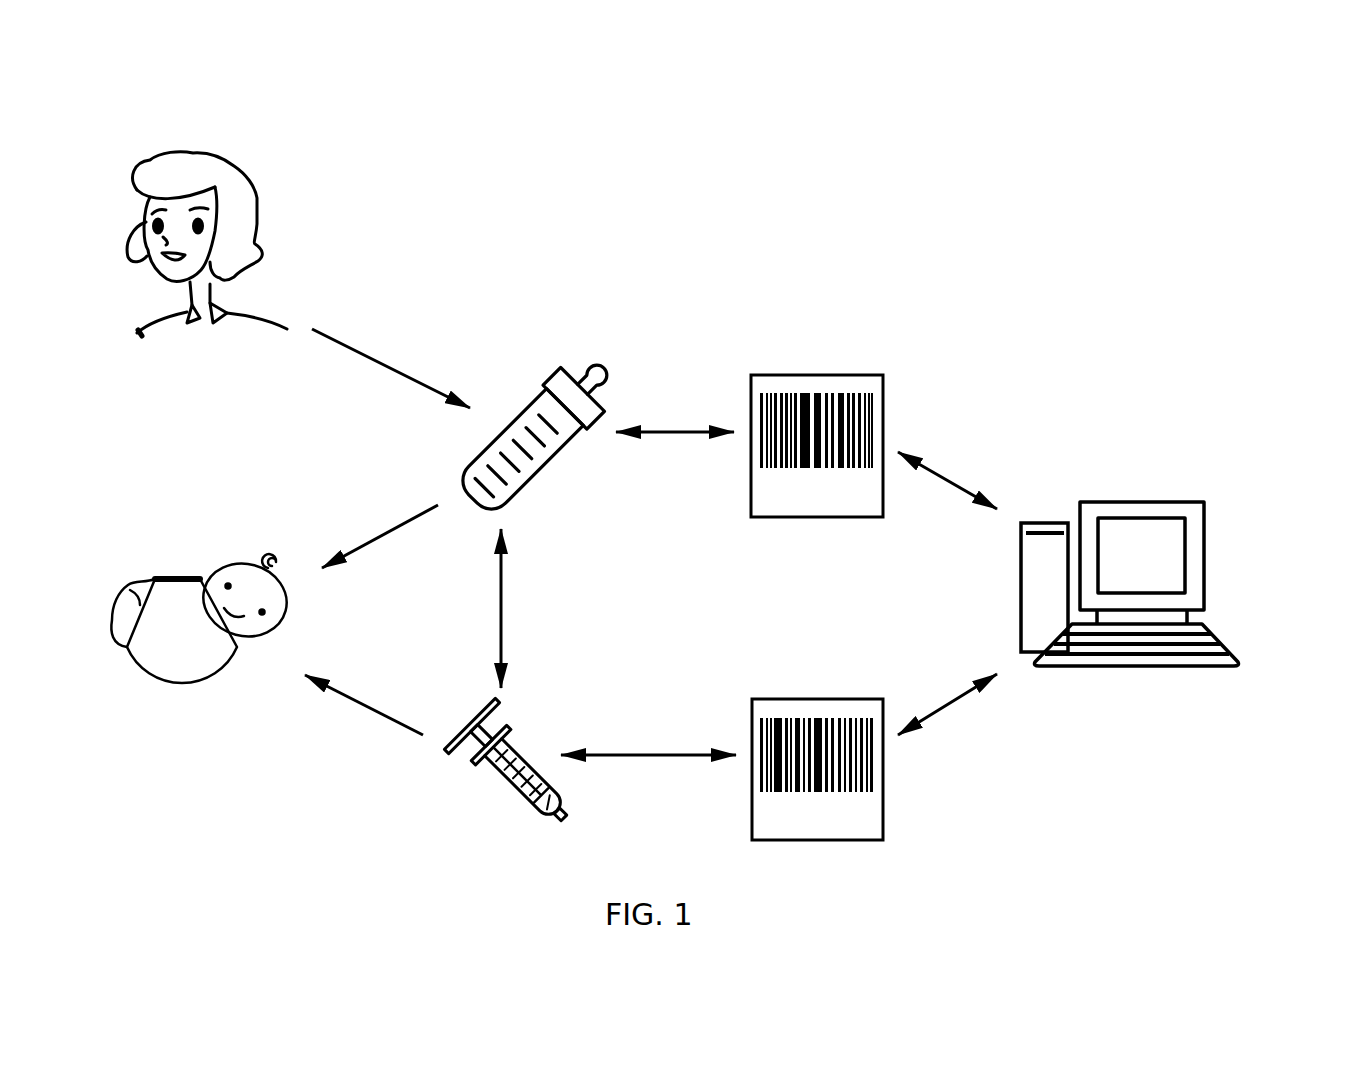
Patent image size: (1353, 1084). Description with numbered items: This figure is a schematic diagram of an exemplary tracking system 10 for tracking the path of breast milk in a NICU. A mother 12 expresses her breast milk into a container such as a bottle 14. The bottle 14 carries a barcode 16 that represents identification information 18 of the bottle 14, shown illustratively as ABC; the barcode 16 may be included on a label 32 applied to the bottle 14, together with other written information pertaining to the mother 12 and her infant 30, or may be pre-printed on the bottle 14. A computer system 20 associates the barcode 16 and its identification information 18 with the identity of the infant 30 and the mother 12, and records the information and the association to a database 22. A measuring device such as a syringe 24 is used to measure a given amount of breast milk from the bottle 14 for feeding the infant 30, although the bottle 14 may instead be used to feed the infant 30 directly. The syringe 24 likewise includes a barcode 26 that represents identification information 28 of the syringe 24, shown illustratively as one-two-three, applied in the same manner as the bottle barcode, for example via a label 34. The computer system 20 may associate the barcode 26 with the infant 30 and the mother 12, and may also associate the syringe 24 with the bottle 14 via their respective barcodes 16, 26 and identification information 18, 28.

The tracking system 10 is at (890, 202).
The mother 12 is at (243, 173).
The bottle 14 is at (558, 370).
The barcode 16 is at (797, 392).
The identification information 18 is at (818, 500).
The computer system 20 is at (1140, 502).
The database 22 is at (1035, 523).
The syringe 24 is at (493, 772).
The barcode 26 is at (818, 717).
The identification information 28 is at (818, 830).
The infant 30 is at (168, 573).
The label 32 is at (857, 375).
The label 34 is at (857, 699).